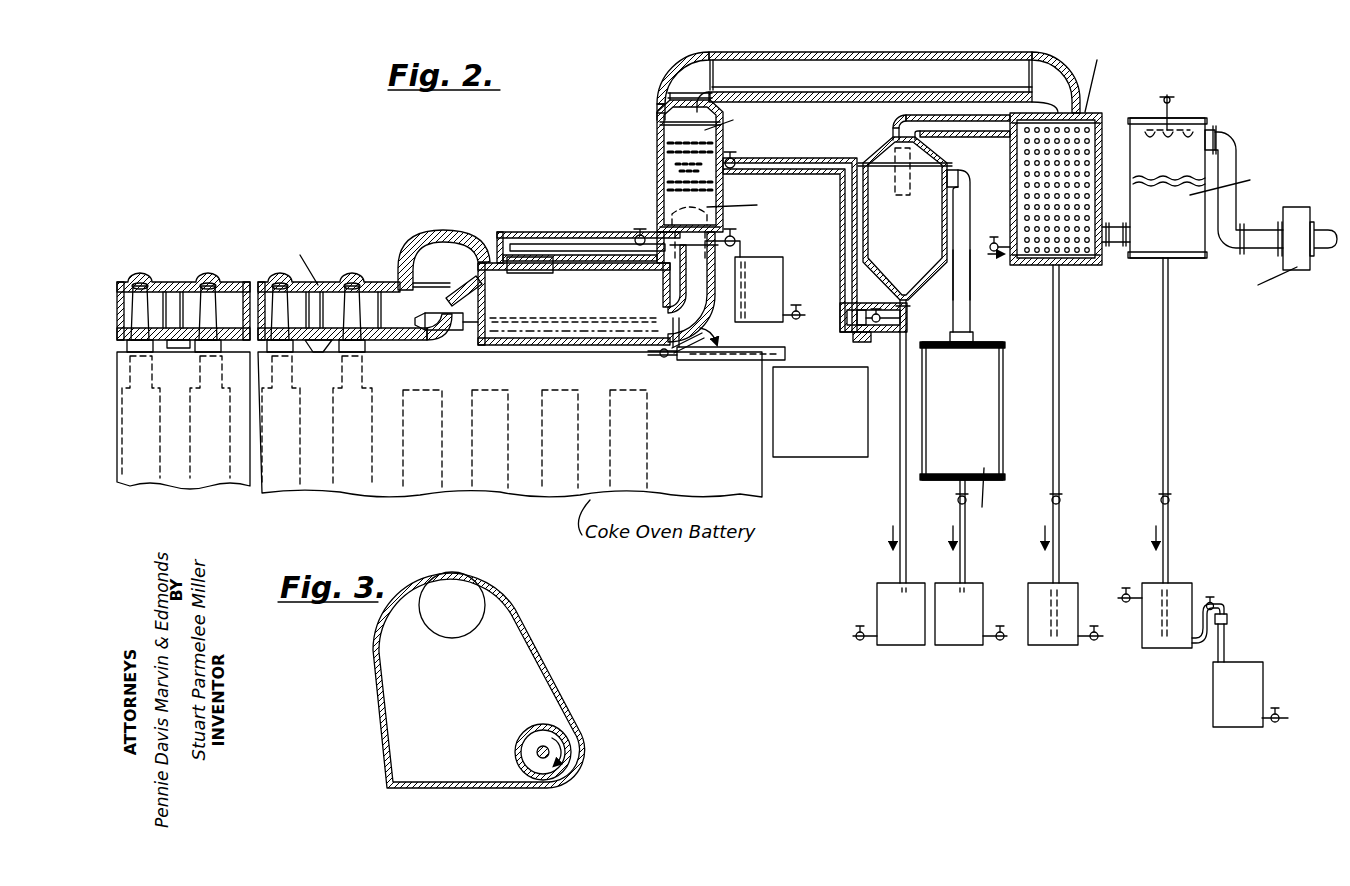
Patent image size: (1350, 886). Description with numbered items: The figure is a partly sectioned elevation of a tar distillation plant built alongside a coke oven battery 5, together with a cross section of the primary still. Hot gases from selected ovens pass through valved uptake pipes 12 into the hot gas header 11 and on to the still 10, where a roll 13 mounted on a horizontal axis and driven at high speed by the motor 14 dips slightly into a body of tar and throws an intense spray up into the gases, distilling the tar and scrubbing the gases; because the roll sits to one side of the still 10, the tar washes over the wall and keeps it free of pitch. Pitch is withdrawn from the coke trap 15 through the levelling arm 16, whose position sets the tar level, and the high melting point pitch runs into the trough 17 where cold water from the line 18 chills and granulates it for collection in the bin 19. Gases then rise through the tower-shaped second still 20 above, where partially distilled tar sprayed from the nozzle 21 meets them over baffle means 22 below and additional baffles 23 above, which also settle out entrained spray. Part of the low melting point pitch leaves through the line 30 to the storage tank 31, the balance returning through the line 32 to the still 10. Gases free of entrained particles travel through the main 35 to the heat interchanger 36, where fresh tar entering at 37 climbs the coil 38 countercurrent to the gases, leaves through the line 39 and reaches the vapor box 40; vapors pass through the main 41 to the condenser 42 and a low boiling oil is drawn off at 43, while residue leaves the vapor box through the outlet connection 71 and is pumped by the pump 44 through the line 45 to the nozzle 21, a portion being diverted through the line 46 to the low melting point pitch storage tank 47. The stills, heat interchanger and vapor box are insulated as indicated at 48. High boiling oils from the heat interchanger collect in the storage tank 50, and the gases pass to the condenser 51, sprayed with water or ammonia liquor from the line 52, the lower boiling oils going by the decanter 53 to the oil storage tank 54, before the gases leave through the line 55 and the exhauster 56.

In FIG. 2, the coke oven battery 5 is at (748, 481).
In FIG. 2, the still 10 is at (574, 273).
In FIG. 3, the still 10 is at (560, 665).
In FIG. 2, the hot gas header 11 is at (172, 307).
In FIG. 2, the uptake pipes 12 is at (350, 327).
In FIG. 2, the roll 13 is at (516, 316).
In FIG. 3, the roll 13 is at (566, 735).
In FIG. 2, the motor 14 is at (449, 322).
In FIG. 2, the coke trap 15 is at (670, 346).
In FIG. 2, the levelling arm 16 is at (690, 336).
In FIG. 2, the trough 17 is at (741, 353).
In FIG. 2, the line 18 is at (672, 360).
In FIG. 2, the bin 19 is at (808, 370).
In FIG. 2, the second still 20 is at (705, 162).
In FIG. 2, the nozzle 21 is at (657, 154).
In FIG. 2, the baffle means 22 is at (657, 181).
In FIG. 2, the additional baffles 23 is at (660, 124).
In FIG. 2, the line 30 is at (741, 245).
In FIG. 2, the storage tank 31 is at (782, 270).
In FIG. 2, the line 32 is at (565, 225).
In FIG. 2, the main 35 is at (830, 203).
In FIG. 2, the heat interchanger 36 is at (1020, 152).
In FIG. 2, the tar inlet 37 is at (992, 249).
In FIG. 2, the coil 38 is at (987, 252).
In FIG. 2, the line 39 is at (920, 126).
In FIG. 2, the vapor box 40 is at (870, 185).
In FIG. 2, the main 41 is at (970, 292).
In FIG. 2, the condenser 42 is at (995, 387).
In FIG. 2, the oil draw-off 43 is at (967, 560).
In FIG. 2, the pump 44 is at (864, 327).
In FIG. 2, the line 45 is at (770, 160).
In FIG. 2, the line 46 is at (898, 473).
In FIG. 2, the low melting point pitch storage tank 47 is at (877, 590).
In FIG. 2, the insulation 48 is at (700, 58).
In FIG. 2, the storage tank 50 is at (1065, 592).
In FIG. 2, the condenser 51 is at (1227, 173).
In FIG. 2, the line 52 is at (1186, 126).
In FIG. 2, the decanter 53 is at (1182, 590).
In FIG. 2, the oil storage tank 54 is at (1253, 670).
In FIG. 2, the line 55 is at (1263, 246).
In FIG. 2, the exhauster 56 is at (1301, 215).
In FIG. 2, the outlet pipe 71 is at (910, 308).